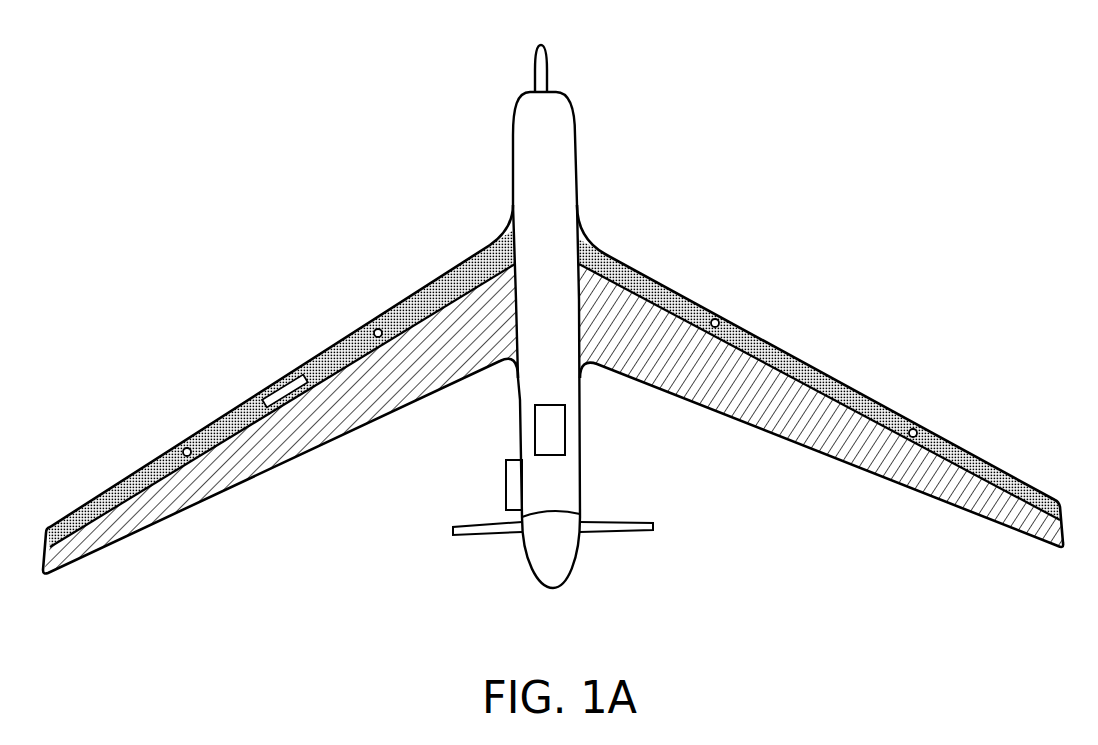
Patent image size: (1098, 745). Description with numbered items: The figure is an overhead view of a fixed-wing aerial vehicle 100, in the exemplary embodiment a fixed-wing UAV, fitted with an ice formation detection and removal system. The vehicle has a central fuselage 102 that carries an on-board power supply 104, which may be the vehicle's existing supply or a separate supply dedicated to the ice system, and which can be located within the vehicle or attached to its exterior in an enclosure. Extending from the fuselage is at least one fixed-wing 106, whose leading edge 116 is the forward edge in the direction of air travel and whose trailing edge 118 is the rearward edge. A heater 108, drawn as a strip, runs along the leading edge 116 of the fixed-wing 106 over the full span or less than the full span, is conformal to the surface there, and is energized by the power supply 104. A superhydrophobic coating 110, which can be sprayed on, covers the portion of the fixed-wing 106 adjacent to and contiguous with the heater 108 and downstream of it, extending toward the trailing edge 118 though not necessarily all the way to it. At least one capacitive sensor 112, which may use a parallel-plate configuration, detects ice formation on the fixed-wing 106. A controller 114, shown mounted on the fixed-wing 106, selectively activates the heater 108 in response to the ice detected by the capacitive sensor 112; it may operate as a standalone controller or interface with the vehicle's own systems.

The fixed-wing aerial vehicle 100 is at (553, 308).
The fuselage 102 is at (557, 158).
The power supply 104 is at (553, 437).
The fixed-wing 106 is at (280, 397).
The heater 108 is at (232, 422).
The superhydrophobic coating 110 is at (305, 442).
The capacitive sensor 112 is at (185, 447).
The controller 114 is at (287, 388).
The leading edge 116 is at (820, 357).
The trailing edge 118 is at (820, 376).